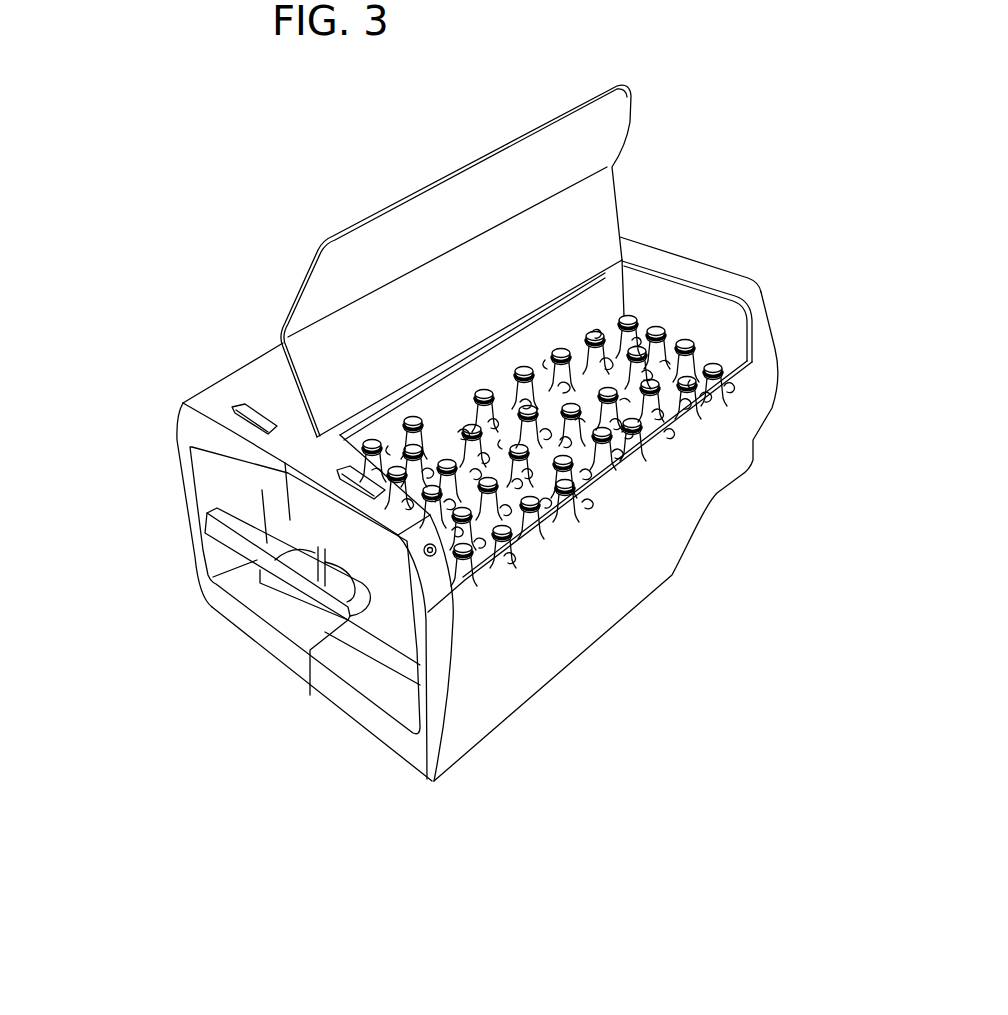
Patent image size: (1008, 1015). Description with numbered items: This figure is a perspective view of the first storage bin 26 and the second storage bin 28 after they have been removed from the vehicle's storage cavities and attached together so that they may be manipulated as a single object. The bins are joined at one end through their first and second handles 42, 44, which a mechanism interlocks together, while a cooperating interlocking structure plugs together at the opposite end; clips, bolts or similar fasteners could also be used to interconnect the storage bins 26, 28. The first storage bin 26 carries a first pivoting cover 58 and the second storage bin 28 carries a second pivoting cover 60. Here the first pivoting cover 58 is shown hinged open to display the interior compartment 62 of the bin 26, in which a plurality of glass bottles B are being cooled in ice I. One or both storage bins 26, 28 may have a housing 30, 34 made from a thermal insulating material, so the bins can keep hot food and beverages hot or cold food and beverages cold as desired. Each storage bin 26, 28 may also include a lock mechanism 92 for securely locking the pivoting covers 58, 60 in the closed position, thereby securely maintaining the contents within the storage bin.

The first storage bin 26 is at (370, 763).
The second storage bin 28 is at (176, 556).
The housing 30 is at (777, 398).
The housing 34 is at (178, 426).
The first handle 42 is at (362, 647).
The second handle 44 is at (257, 560).
The first pivoting cover 58 is at (583, 222).
The second pivoting cover 60 is at (255, 373).
The interior compartment 62 is at (692, 312).
The lock mechanism 92 is at (436, 560).
The glass bottles B is at (531, 506).
The ice I is at (593, 463).